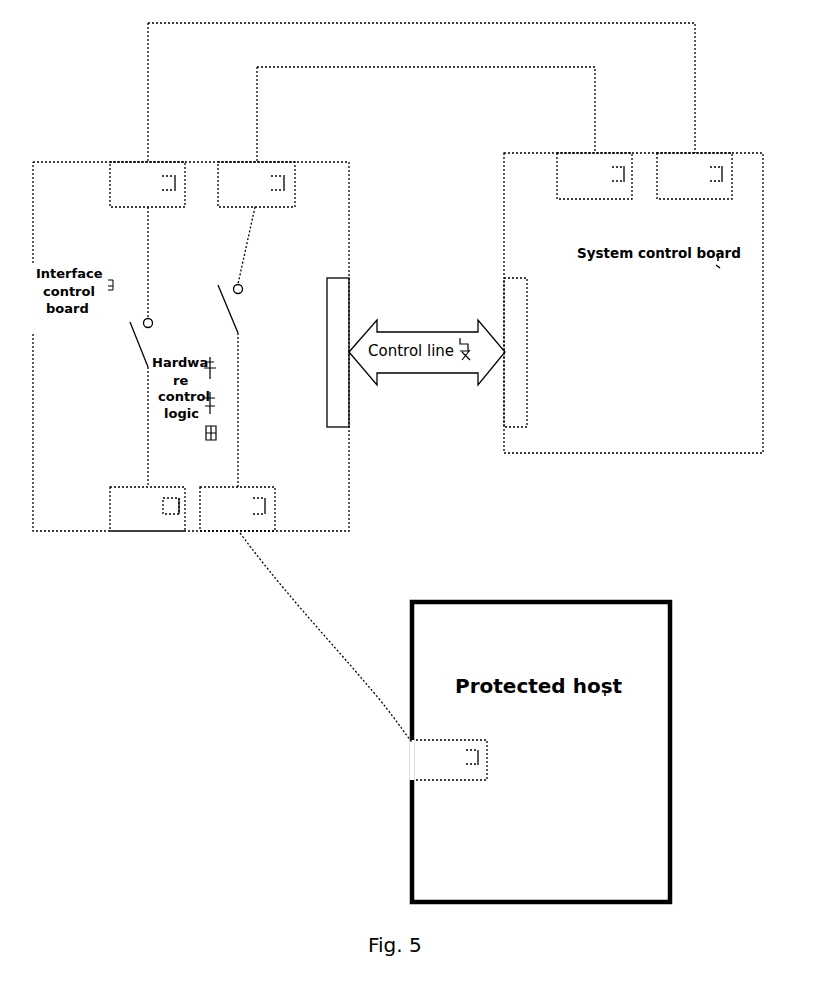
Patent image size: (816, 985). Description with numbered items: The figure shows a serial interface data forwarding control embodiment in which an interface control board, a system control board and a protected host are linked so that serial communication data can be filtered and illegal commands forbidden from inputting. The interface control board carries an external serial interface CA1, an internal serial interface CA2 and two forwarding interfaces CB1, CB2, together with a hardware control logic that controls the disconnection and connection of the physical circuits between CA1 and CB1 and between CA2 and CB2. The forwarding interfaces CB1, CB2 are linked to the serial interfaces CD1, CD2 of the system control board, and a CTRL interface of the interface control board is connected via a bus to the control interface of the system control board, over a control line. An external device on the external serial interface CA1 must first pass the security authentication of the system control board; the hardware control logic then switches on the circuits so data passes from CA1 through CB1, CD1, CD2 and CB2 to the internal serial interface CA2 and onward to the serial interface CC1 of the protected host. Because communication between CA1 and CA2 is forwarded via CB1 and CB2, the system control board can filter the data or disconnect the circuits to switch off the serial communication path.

The forwarding interface CB1 is at (144, 166).
The forwarding interface CB2 is at (250, 166).
The external serial interface CA1 is at (147, 527).
The internal serial interface CA2 is at (236, 527).
The serial interface CD1 is at (586, 158).
The serial interface CD2 is at (690, 156).
The serial interface of the protected host CC1 is at (426, 760).
The CTRL interface CTRL is at (307, 352).